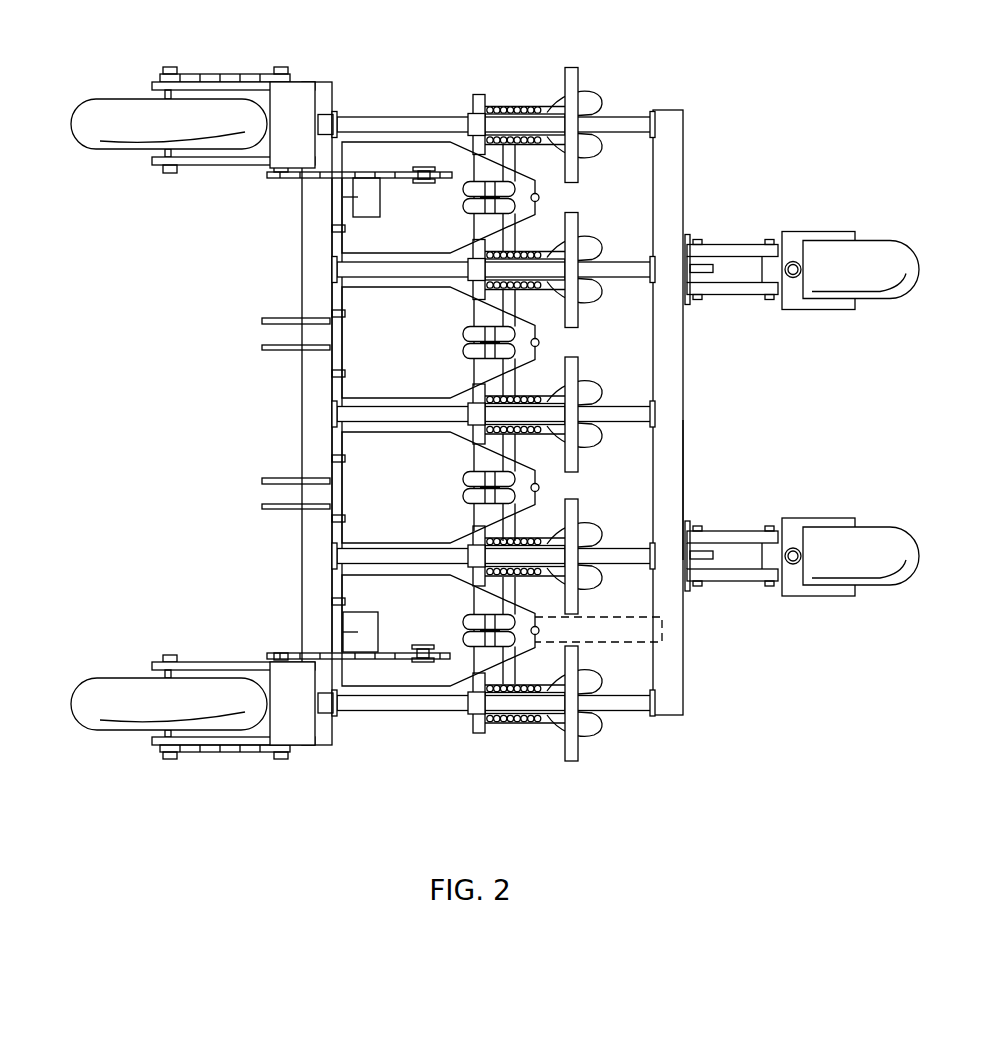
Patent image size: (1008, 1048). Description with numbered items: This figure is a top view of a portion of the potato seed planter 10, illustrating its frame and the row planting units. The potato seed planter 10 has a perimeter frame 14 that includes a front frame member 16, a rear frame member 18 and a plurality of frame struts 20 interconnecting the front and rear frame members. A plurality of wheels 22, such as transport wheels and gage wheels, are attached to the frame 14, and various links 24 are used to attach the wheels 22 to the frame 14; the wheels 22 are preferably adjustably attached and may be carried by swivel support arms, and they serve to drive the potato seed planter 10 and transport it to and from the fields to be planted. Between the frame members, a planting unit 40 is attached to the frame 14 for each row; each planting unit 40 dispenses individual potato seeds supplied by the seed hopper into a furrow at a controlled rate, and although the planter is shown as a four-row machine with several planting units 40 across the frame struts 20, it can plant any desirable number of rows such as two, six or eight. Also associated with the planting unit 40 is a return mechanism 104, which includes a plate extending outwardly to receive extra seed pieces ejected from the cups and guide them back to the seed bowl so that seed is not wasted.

The potato seed planter 10 is at (757, 83).
The perimeter frame 14 is at (683, 366).
The front frame member 16 is at (303, 237).
The rear frame member 18 is at (678, 485).
The frame struts 20 is at (432, 118).
The wheels 22 is at (117, 105).
The links 24 is at (236, 75).
The planting unit 40 is at (368, 446).
The return mechanism 104 is at (383, 668).